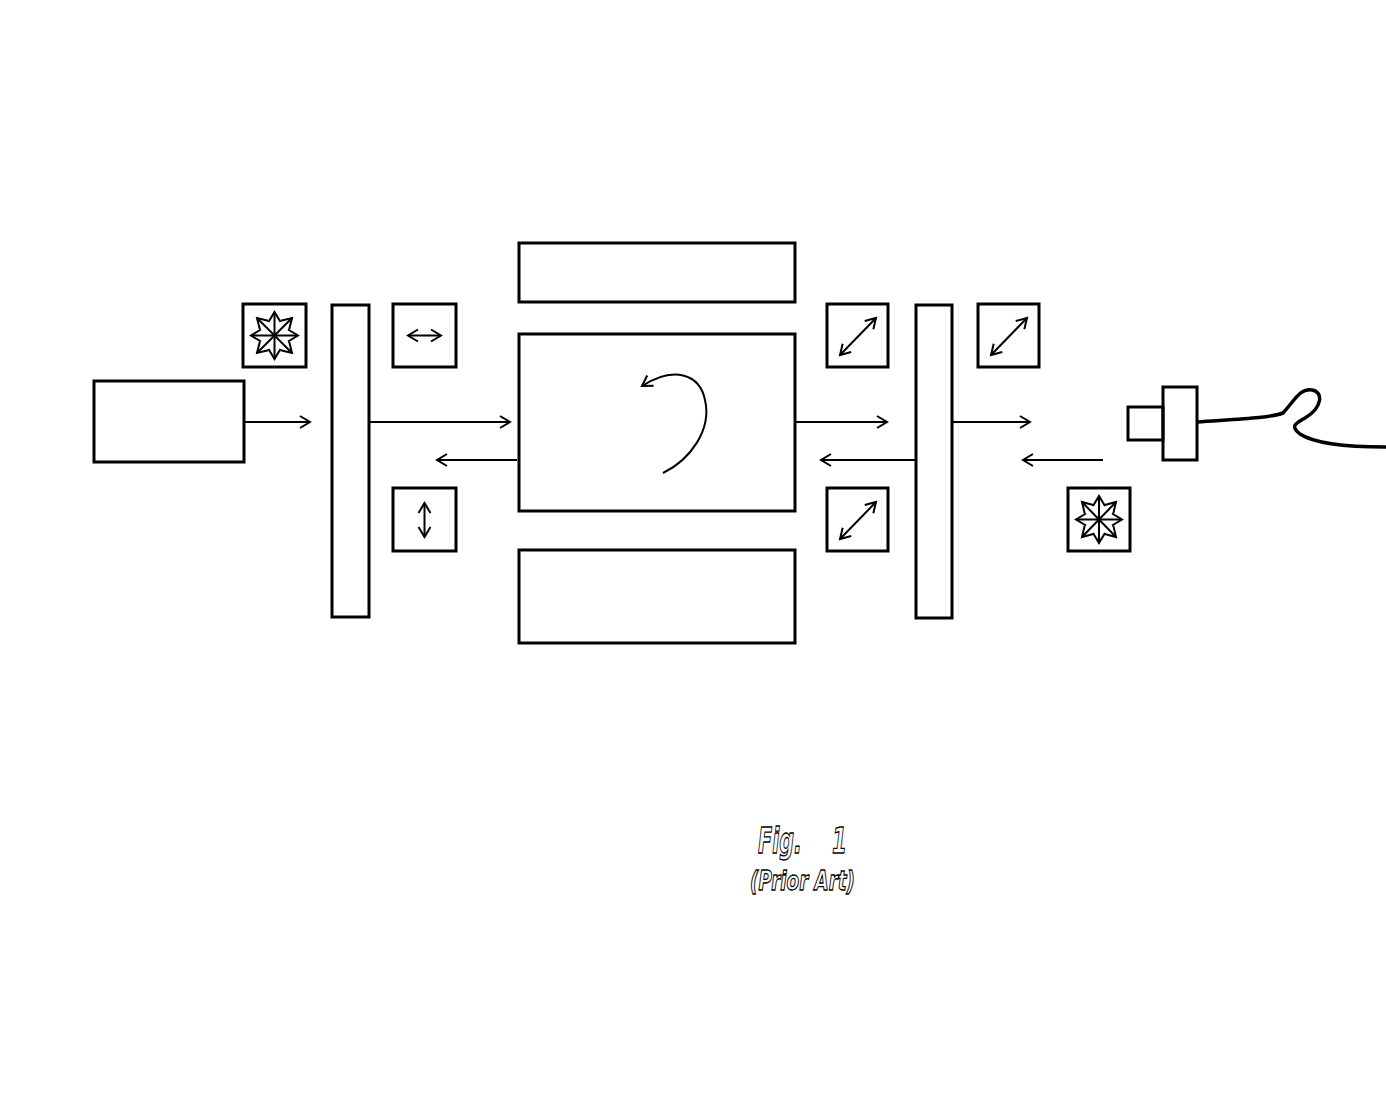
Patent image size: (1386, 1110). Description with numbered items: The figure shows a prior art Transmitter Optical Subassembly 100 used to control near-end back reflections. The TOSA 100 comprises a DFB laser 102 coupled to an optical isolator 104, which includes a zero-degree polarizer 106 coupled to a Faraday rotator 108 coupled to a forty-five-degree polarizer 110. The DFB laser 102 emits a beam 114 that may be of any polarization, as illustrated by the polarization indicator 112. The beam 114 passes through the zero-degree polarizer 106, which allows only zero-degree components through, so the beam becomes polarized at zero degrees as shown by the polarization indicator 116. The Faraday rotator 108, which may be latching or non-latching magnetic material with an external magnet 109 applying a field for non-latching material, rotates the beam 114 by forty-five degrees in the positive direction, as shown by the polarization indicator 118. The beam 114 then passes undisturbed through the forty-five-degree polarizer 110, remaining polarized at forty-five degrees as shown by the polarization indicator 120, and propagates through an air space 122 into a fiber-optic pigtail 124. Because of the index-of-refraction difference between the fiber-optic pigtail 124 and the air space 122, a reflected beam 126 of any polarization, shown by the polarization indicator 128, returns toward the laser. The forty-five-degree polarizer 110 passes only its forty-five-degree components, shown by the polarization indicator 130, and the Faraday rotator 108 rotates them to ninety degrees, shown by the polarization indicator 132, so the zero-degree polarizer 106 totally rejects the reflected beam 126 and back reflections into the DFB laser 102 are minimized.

The Transmitter Optical Subassembly (TOSA) 100 is at (228, 148).
The DFB laser 102 is at (155, 463).
The optical isolator 104 is at (333, 697).
The 0° polarizer 106 is at (345, 618).
The Faraday rotator 108 is at (795, 653).
The external magnet 109 is at (682, 250).
The 45° polarizer 110 is at (930, 618).
The polarization indicator 112 is at (258, 282).
The beam 114 is at (293, 425).
The polarization indicator 116 is at (423, 304).
The polarization indicator 118 is at (855, 304).
The polarization indicator 120 is at (1017, 277).
The air space 122 is at (1195, 625).
The fiber-optic pigtail 124 is at (1197, 438).
The reflected beam 126 is at (1045, 462).
The polarization indicator 128 is at (1107, 553).
The polarization indicator 130 is at (853, 551).
The polarization indicator 132 is at (423, 551).